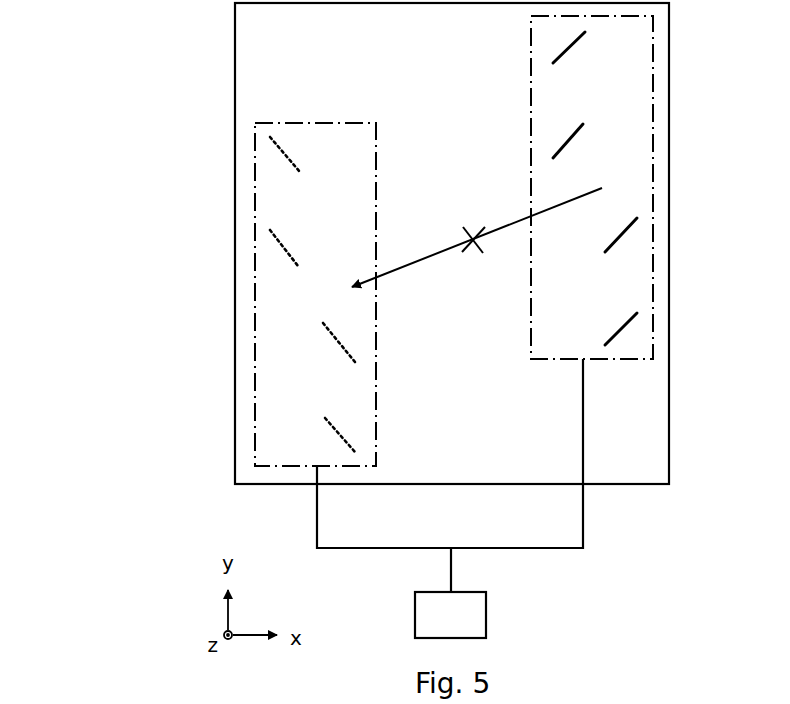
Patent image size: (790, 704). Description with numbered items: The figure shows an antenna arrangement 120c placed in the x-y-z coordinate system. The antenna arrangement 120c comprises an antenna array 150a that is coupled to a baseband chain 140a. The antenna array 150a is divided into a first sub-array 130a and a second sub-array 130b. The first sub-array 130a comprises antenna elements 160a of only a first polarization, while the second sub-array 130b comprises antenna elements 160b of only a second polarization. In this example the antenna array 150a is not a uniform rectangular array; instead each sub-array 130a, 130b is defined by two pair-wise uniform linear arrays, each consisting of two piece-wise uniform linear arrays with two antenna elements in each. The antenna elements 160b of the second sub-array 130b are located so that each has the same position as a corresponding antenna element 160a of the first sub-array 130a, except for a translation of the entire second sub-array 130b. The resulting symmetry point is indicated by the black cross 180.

The antenna arrangement 120c is at (125, 72).
The antenna array 150a is at (452, 243).
The first sub-array 130a is at (592, 187).
The second sub-array 130b is at (315, 294).
The antenna elements 160a is at (573, 133).
The antenna elements 160b is at (283, 253).
The black cross 180 is at (465, 252).
The baseband chain 140a is at (486, 602).